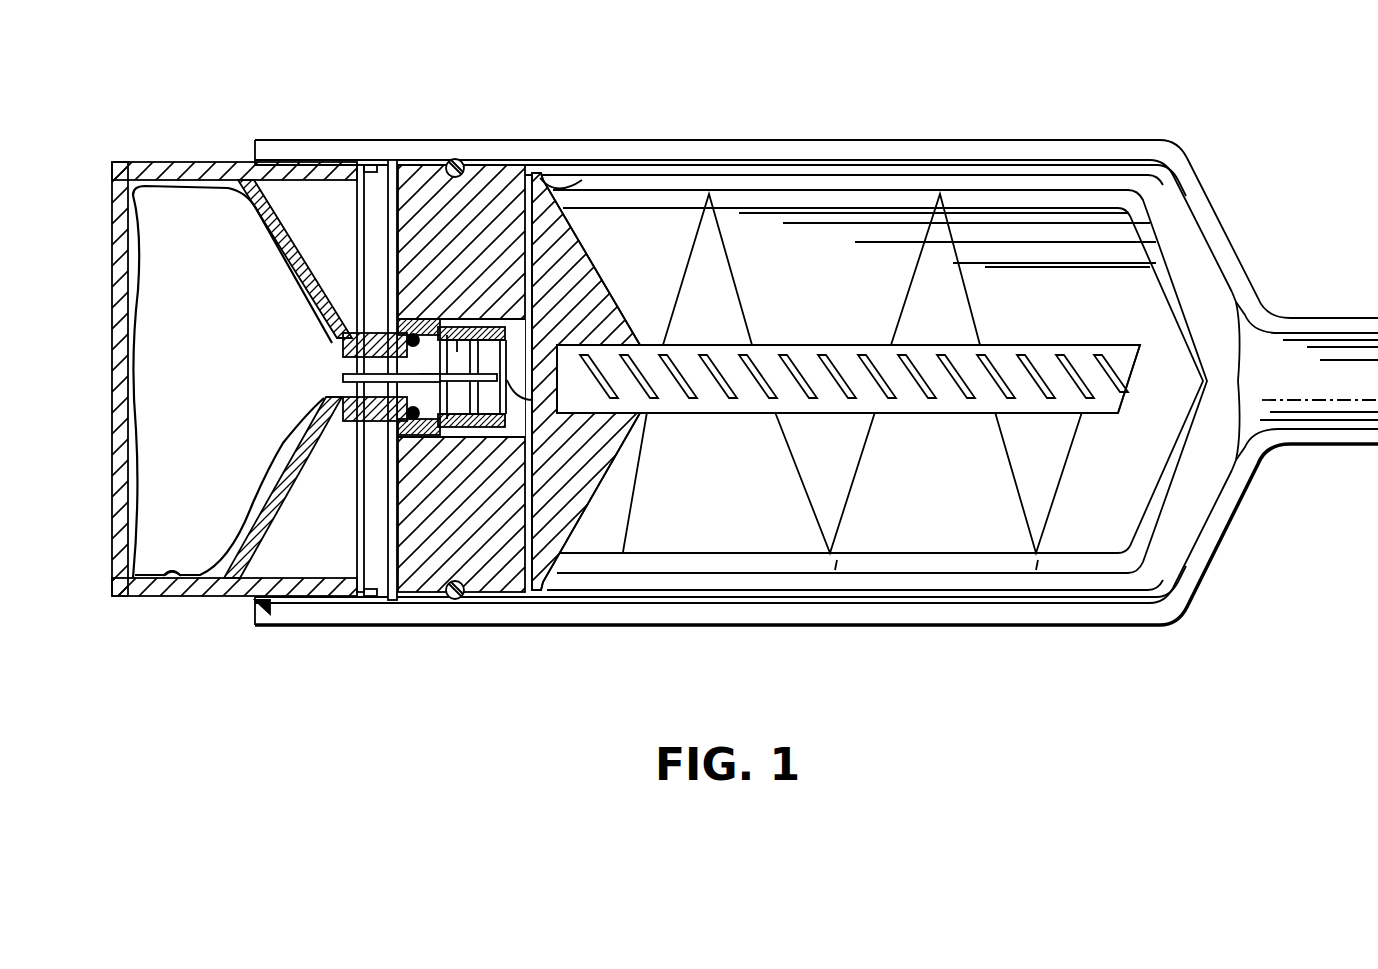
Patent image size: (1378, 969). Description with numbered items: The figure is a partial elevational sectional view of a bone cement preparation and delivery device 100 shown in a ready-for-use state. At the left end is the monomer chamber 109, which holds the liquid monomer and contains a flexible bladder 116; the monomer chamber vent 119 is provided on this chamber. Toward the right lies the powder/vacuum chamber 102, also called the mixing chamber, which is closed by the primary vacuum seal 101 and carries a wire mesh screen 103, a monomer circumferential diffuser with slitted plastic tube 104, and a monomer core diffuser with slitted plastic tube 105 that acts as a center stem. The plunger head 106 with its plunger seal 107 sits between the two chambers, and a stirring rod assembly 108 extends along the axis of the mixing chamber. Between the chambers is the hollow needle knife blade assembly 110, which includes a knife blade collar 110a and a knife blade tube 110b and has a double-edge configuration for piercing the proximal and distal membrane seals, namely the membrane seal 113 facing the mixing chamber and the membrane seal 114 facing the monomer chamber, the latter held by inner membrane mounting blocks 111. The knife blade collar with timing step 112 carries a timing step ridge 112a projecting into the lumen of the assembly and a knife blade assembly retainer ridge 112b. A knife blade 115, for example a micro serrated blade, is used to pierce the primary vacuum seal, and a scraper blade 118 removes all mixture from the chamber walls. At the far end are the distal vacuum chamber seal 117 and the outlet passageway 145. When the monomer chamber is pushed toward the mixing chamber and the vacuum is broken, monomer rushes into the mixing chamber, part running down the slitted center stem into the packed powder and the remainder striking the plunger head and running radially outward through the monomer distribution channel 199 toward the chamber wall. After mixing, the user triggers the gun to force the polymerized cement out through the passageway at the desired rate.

The dispensing device 100 is at (818, 634).
The primary vacuum seal 101 is at (373, 594).
The powder/vacuum chamber 102 is at (848, 158).
The wire mesh screen 103 is at (932, 163).
The monomer circumferential diffuser with slitted plastic tube 104 is at (1022, 172).
The monomer core diffuser with slitted plastic tube 105 is at (1115, 350).
The plunger head 106 is at (430, 193).
The plunger seal 107 is at (455, 160).
The stirring rod assembly 108 is at (657, 202).
The monomer chamber 109 is at (150, 158).
The hollow needle knife blade assembly 110 is at (445, 425).
The knife blade collar 110a is at (458, 352).
The knife blade tube 110b is at (410, 335).
The inner membrane mounting blocks 111 is at (263, 606).
The knife blade collar with timing step 112 is at (478, 420).
The timing step ridge 112a is at (487, 327).
The knife blade assembly retainer ridge 112b is at (500, 420).
The membrane seal 113 is at (585, 465).
The membrane seal 114 is at (343, 378).
The knife blade 115 is at (366, 158).
The flexible bladder 116 is at (170, 582).
The distal vacuum chamber seal 117 is at (1272, 392).
The scraper blade 118 is at (540, 177).
The monomer chamber vent 119 is at (108, 373).
The passageway 145 is at (1320, 362).
The monomer distribution channel 199 is at (510, 400).